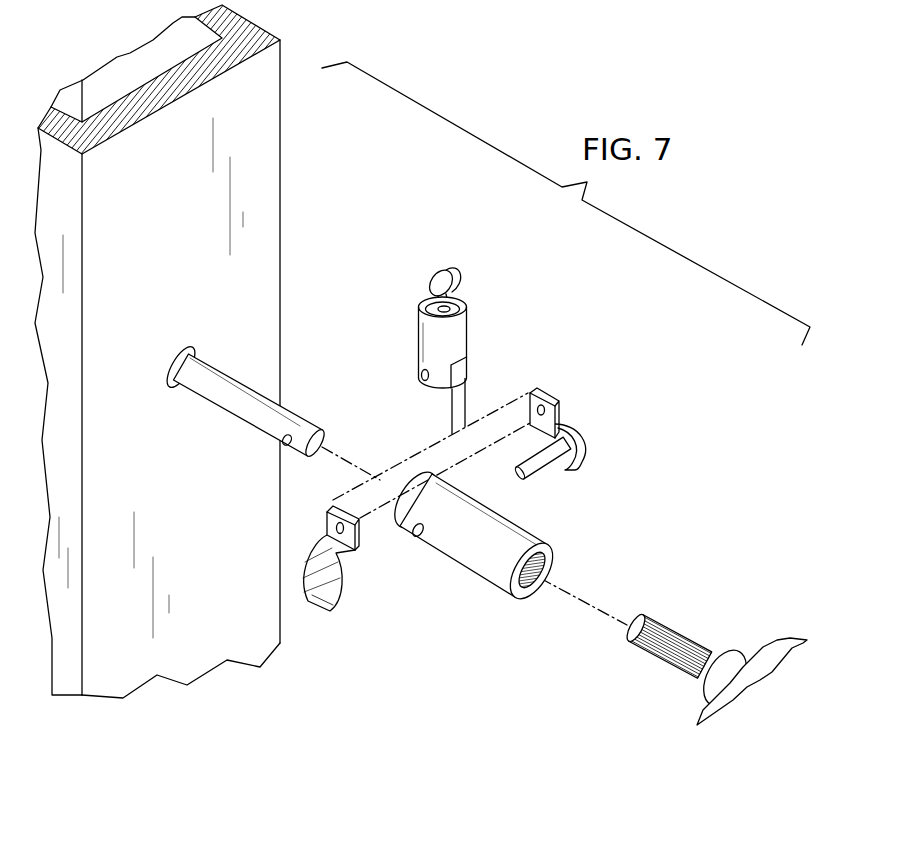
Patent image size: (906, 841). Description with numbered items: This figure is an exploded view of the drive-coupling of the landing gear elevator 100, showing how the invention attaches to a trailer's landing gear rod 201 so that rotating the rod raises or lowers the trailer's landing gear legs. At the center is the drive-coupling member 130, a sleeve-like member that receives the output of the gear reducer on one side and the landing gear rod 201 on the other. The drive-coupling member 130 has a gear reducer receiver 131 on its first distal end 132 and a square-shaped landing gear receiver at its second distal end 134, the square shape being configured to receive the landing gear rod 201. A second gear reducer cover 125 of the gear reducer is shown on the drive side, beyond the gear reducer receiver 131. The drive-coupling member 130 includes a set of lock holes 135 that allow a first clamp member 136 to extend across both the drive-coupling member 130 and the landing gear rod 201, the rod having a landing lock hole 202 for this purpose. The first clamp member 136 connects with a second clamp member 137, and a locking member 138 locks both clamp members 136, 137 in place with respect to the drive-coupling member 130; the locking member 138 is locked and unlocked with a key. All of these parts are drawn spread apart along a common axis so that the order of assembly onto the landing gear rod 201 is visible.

The landing gear elevator 100 is at (380, 211).
The second gear reducer cover 125 is at (677, 630).
The drive-coupling member 130 is at (497, 573).
The gear reducer receiver 131 is at (545, 580).
The first distal end 132 is at (520, 590).
The second distal end 134 is at (402, 508).
The lock holes 135 is at (418, 537).
The first clamp member 136 is at (583, 432).
The second clamp member 137 is at (313, 593).
The locking member 138 is at (460, 344).
The landing gear rod 201 is at (285, 410).
The landing lock hole 202 is at (278, 442).